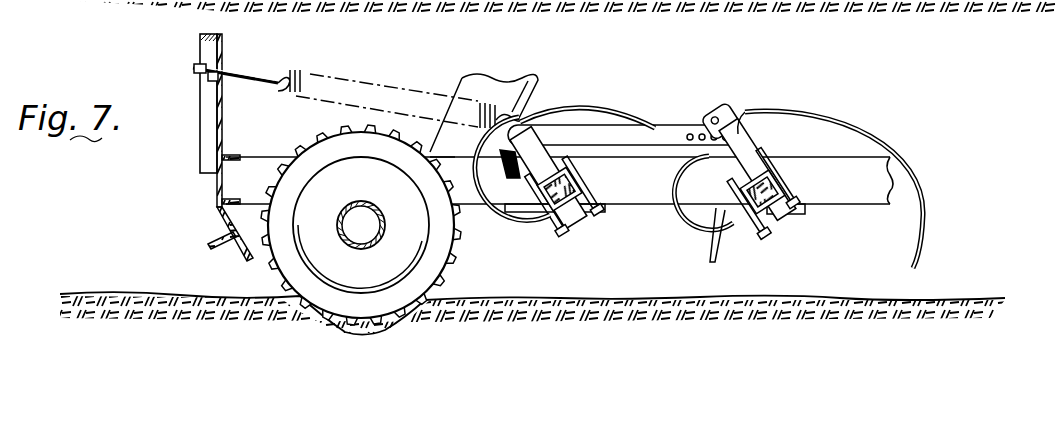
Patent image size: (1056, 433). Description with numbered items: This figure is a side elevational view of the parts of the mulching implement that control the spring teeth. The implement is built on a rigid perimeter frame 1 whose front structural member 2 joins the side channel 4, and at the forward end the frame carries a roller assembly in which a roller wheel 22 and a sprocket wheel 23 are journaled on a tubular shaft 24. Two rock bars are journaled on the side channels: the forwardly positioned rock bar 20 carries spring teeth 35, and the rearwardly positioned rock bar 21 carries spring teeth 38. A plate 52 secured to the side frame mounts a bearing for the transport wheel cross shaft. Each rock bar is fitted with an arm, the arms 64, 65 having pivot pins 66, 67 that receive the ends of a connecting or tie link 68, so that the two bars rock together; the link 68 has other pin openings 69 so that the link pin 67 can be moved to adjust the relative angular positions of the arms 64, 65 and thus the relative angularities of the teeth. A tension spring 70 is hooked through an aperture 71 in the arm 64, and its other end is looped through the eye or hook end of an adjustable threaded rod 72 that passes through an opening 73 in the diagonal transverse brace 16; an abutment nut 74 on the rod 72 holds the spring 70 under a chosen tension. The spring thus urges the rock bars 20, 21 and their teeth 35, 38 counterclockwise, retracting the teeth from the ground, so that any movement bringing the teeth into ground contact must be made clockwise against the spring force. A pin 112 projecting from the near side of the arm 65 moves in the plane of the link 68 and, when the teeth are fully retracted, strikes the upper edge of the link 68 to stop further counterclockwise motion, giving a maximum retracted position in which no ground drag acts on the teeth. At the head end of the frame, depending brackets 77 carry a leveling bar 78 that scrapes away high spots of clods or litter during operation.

The perimeter frame 1 is at (852, 212).
The front structural member 2 is at (219, 182).
The side channel 4 is at (258, 166).
The diagonal transverse brace 16 is at (206, 90).
The forward rock bar 20 is at (572, 210).
The rear rock bar 21 is at (772, 214).
The roller wheel 22 is at (413, 243).
The sprocket wheel 23 is at (437, 165).
The tubular shaft 24 is at (344, 208).
The spring teeth 35 is at (622, 110).
The spring teeth 38 is at (896, 142).
The plate 52 is at (470, 76).
The arm 64 is at (532, 167).
The arm 65 is at (757, 160).
The pivot pin 66 is at (530, 133).
The pivot pin 67 is at (748, 128).
The tie link 68 is at (665, 128).
The pin openings 69 is at (701, 141).
The tension spring 70 is at (326, 78).
The aperture 71 is at (528, 96).
The adjustable threaded rod 72 is at (244, 74).
The opening 73 is at (222, 78).
The abutment nut 74 is at (212, 70).
The depending bracket 77 is at (218, 212).
The leveling bar 78 is at (222, 244).
The pin 112 is at (720, 110).